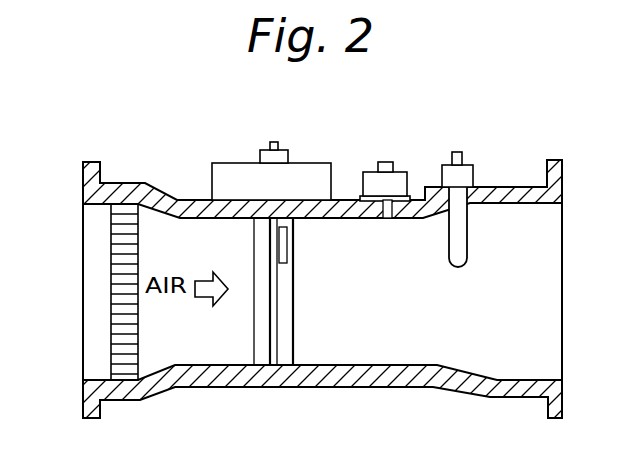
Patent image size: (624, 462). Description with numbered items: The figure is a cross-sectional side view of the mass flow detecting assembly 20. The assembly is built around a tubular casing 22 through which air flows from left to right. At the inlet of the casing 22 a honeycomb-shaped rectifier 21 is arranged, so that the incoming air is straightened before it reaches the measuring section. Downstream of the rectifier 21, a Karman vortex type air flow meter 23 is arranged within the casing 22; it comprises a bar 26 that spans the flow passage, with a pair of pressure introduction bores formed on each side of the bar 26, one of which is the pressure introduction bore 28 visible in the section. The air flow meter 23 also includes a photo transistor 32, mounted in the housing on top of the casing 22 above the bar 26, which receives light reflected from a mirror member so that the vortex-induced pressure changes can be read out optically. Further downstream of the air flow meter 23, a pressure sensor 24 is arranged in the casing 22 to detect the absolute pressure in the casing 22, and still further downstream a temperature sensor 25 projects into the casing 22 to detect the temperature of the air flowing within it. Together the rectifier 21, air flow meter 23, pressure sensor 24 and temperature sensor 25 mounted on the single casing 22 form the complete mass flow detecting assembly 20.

The mass flow detecting assembly 20 is at (514, 154).
The honeycomb-shaped rectifier 21 is at (118, 332).
The tubular casing 22 is at (193, 378).
The Karman vortex type air flow meter 23 is at (303, 325).
The pressure sensor 24 is at (377, 176).
The temperature sensor 25 is at (452, 172).
The bar 26 is at (262, 328).
The pressure introduction bore 28 is at (287, 245).
The photo transistor 32 is at (282, 160).